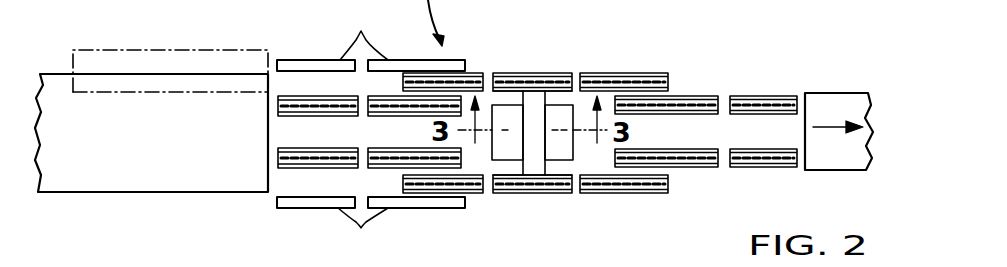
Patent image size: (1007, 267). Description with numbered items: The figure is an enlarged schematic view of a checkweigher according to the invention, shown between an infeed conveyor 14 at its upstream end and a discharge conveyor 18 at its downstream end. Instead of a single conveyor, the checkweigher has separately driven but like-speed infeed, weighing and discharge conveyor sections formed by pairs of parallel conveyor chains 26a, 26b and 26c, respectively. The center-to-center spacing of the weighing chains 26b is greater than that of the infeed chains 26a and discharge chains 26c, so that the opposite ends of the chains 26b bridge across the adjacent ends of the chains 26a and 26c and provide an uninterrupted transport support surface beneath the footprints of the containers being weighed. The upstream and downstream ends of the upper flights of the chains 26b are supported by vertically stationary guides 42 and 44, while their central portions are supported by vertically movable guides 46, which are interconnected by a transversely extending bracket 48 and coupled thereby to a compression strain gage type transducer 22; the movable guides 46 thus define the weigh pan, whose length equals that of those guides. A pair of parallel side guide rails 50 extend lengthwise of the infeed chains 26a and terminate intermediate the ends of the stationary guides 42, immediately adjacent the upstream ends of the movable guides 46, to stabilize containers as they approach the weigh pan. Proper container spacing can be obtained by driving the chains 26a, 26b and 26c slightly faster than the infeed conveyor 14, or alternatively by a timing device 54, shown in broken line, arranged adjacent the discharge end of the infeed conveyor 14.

The infeed conveyor 14 is at (94, 146).
The discharge conveyor 18 is at (835, 96).
The compression strain gage type transducer 22 is at (558, 143).
The infeed conveyor chains 26a is at (322, 148).
The weighing conveyor chains 26b is at (488, 74).
The discharge conveyor chains 26c is at (742, 93).
The vertically stationary guides 42 is at (440, 72).
The vertically stationary guides 44 is at (637, 72).
The vertically movable guides 46 is at (548, 73).
The bracket 48 is at (535, 168).
The side guide rails 50 is at (363, 132).
The timing device 54 is at (107, 46).